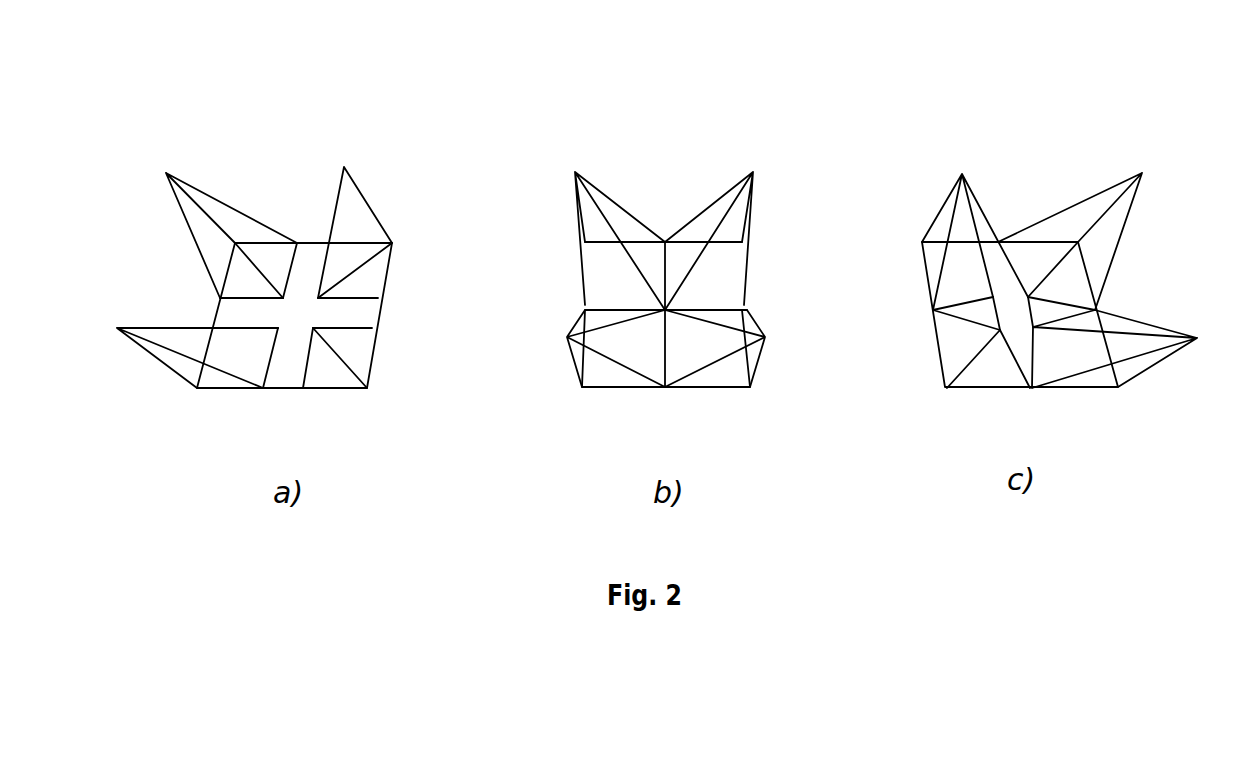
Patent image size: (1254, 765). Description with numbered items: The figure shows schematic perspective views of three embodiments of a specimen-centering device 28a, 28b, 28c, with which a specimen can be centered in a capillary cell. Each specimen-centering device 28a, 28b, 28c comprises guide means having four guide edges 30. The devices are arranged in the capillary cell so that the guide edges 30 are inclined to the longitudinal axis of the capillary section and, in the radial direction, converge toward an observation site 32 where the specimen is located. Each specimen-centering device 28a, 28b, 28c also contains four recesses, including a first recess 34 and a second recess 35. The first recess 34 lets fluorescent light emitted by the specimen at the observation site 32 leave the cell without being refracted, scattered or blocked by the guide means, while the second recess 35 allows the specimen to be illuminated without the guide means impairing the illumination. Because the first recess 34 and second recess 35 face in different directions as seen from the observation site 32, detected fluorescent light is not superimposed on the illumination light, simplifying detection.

The specimen-centering device 28a is at (238, 140).
The specimen-centering device 28b is at (678, 138).
The specimen-centering device 28c is at (1005, 140).
The guide edges 30 is at (247, 260).
The observation site 32 is at (300, 310).
The first recess 34 is at (148, 310).
The second recess 35 is at (253, 407).